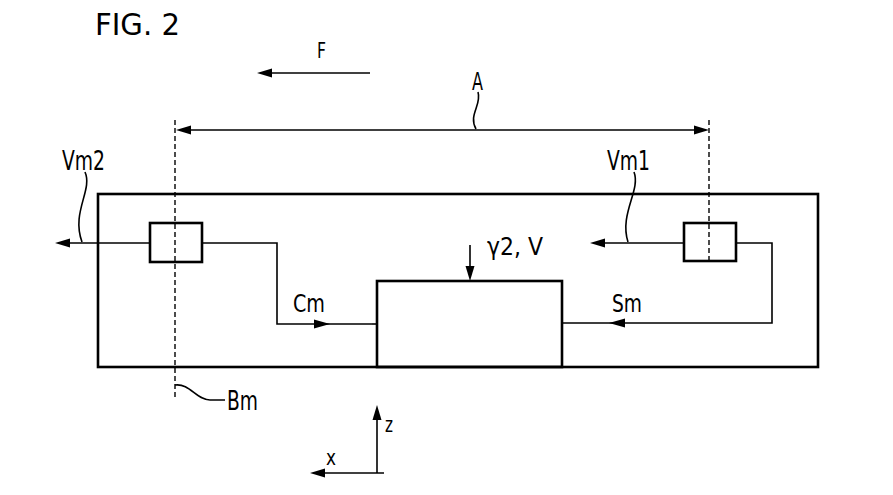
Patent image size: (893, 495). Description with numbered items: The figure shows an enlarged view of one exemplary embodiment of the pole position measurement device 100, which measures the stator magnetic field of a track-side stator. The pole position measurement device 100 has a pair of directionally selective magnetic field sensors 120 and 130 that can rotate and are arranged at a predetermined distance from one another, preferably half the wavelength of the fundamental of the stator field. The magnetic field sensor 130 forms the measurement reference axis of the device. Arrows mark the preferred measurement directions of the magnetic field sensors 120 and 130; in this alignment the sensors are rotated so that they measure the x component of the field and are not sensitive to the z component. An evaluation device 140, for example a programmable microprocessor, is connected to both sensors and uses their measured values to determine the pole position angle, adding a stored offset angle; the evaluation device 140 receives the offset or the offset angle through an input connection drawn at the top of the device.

The pole position measurement device 100 is at (620, 368).
The magnetic field sensor 120 is at (722, 222).
The magnetic field sensor 130 is at (160, 222).
The evaluation device 140 is at (470, 283).